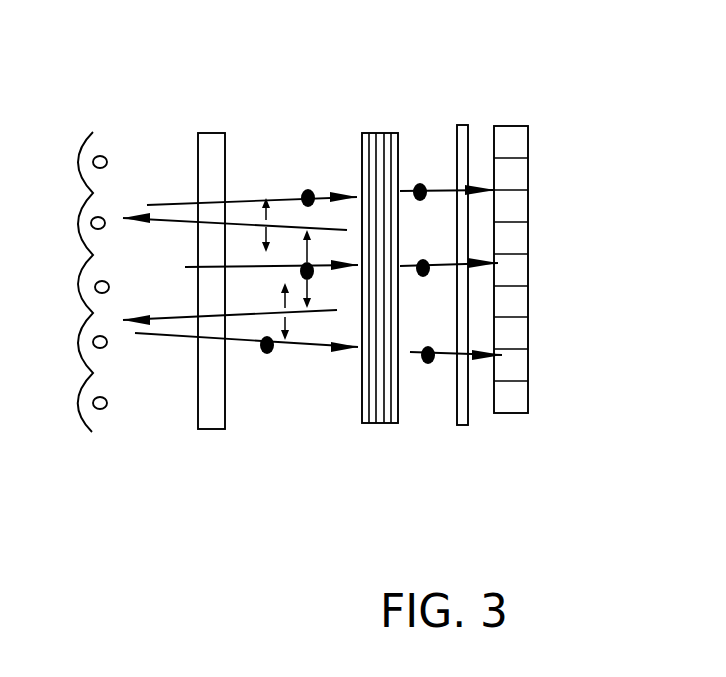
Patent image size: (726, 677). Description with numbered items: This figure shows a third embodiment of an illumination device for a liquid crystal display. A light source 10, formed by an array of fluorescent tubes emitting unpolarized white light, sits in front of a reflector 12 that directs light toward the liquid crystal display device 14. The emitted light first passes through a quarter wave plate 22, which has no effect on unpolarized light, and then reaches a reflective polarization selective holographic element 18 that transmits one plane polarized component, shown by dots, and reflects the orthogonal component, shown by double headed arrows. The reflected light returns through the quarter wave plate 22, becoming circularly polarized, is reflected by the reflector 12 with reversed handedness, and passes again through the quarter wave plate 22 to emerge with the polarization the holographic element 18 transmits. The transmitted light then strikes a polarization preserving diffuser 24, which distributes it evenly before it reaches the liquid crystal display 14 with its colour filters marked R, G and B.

The light source 10 is at (102, 157).
The reflector 12 is at (78, 400).
The liquid crystal display device 14 is at (515, 413).
The reflective polarization selective holographic element 18 is at (385, 135).
The quarter wave plate 22 is at (208, 420).
The polarization preserving diffuser 24 is at (462, 128).